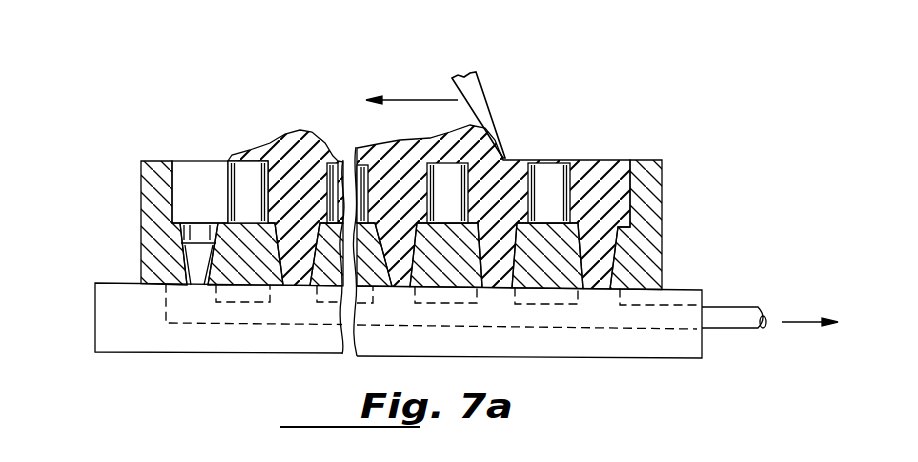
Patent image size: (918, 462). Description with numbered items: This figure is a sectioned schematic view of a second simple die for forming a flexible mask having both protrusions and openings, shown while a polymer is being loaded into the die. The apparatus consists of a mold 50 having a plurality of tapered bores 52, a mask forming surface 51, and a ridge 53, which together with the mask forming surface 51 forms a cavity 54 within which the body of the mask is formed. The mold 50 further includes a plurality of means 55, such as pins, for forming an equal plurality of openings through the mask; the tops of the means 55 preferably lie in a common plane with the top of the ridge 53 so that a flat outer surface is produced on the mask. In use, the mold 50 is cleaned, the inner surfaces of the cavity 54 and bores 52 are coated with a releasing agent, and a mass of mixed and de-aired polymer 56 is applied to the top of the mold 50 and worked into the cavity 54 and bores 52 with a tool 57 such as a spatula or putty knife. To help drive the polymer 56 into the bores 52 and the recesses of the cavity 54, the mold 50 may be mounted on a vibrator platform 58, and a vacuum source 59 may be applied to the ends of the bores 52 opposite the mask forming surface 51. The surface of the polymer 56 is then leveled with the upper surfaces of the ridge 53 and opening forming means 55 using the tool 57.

The mold 50 is at (652, 245).
The mask forming surface 51 is at (223, 197).
The tapered bores 52 is at (198, 262).
The ridge 53 is at (153, 192).
The cavity 54 is at (200, 195).
The means for forming openings 55 is at (543, 178).
The polymer 56 is at (392, 152).
The tool 57 is at (475, 95).
The vibrator platform 58 is at (137, 323).
The vacuum source 59 is at (733, 322).